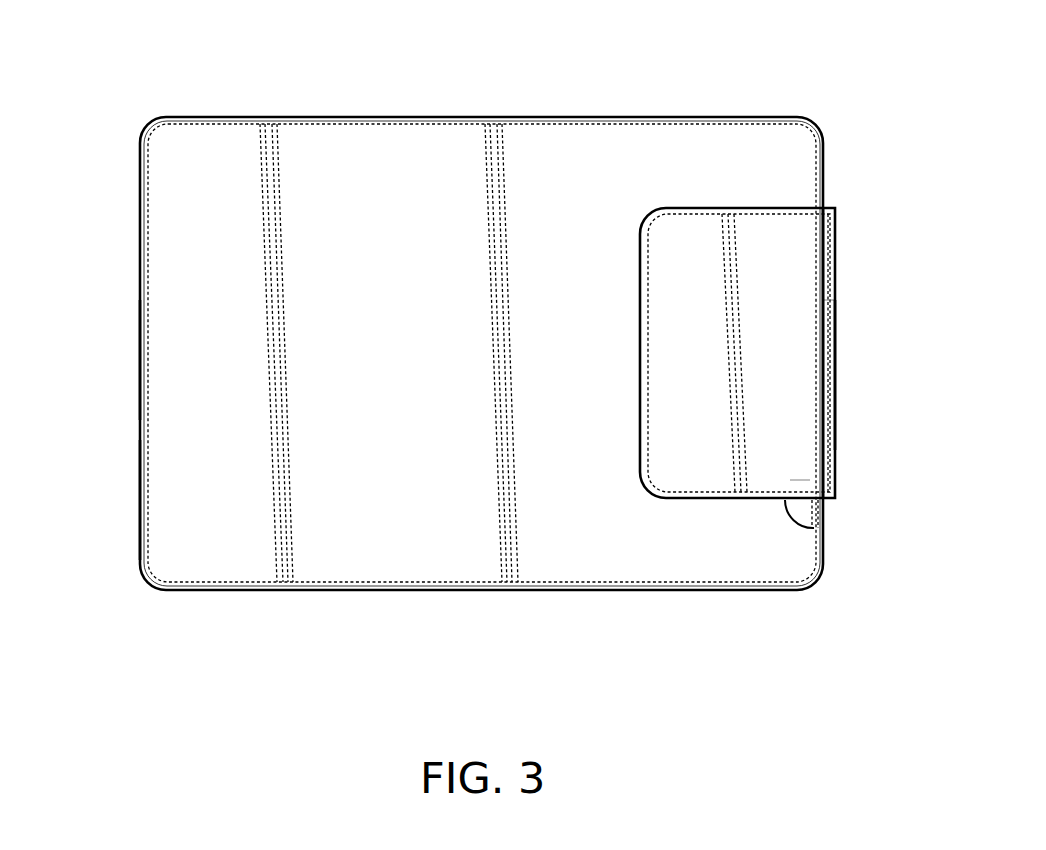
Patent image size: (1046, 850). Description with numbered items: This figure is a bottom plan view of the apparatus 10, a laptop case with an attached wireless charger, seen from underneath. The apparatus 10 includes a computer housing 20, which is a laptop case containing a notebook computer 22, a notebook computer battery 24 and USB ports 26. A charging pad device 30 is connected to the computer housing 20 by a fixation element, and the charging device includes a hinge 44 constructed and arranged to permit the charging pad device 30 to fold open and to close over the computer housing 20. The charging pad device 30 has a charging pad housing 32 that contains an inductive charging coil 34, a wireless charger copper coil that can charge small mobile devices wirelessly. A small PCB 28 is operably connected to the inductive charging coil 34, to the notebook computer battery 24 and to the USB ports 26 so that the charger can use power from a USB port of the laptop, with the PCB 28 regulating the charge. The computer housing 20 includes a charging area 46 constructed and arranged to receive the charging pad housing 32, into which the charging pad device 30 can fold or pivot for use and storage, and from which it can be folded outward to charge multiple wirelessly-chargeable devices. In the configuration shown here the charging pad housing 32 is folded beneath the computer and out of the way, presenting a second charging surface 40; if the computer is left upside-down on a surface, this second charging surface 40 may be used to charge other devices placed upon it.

The apparatus 10 is at (124, 81).
The computer housing 20 is at (207, 592).
The notebook computer 22 is at (327, 592).
The notebook computer battery 24 is at (412, 592).
The USB ports 26 is at (140, 490).
The PCB 28 is at (140, 382).
The charging pad device 30 is at (815, 222).
The charging pad housing 32 is at (810, 465).
The inductive charging coil 34 is at (888, 312).
The second charging surface 40 is at (807, 260).
The hinge 44 is at (833, 375).
The charging area 46 is at (787, 502).